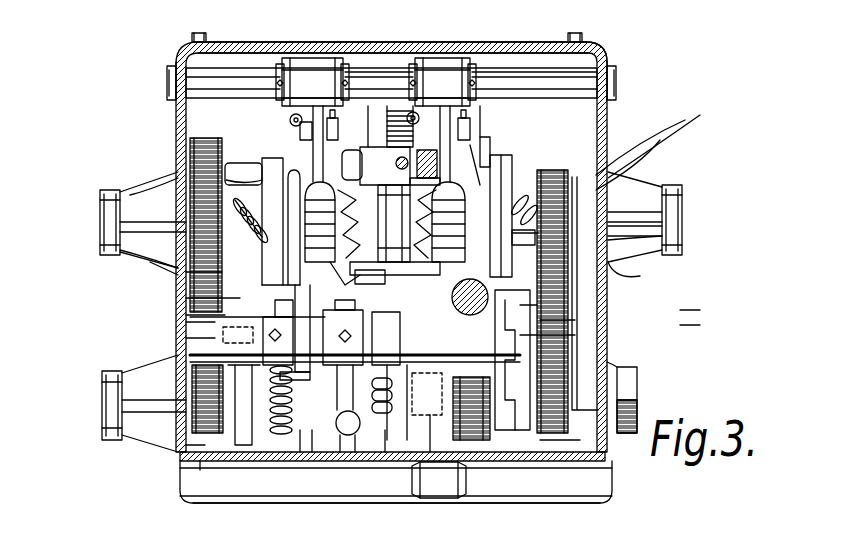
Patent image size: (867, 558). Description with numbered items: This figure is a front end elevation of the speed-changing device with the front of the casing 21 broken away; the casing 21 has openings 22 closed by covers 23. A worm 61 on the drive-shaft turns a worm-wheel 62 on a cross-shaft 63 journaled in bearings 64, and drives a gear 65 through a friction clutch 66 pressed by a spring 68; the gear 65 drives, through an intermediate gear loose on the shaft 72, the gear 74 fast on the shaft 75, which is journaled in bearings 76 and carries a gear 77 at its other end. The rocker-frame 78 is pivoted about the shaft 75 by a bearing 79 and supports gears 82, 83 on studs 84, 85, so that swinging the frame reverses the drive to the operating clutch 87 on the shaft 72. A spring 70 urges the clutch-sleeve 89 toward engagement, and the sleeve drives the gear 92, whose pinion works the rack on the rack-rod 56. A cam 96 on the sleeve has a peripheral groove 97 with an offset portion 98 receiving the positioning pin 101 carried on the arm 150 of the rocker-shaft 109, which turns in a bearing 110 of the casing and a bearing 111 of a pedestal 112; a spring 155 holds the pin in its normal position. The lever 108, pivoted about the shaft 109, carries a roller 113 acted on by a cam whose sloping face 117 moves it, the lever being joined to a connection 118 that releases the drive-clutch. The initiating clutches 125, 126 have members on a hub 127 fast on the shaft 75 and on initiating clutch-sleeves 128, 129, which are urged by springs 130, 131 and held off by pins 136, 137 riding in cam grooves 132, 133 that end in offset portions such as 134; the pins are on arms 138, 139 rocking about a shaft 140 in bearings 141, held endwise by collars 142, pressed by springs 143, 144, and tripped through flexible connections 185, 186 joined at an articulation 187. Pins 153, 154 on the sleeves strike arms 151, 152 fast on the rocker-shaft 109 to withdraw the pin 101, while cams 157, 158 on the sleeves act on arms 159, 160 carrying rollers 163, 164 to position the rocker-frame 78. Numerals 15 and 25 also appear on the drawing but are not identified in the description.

The casing 21 is at (178, 50).
The openings 22 is at (190, 38).
The covers 23 is at (240, 48).
The sloping face 117 is at (580, 38).
The roller 164 is at (600, 55).
The cam 96 is at (190, 500).
The offset portion 98 is at (240, 465).
The gear 92 is at (385, 85).
The connection 185 is at (360, 120).
The connection 186 is at (480, 100).
The shaft 140 is at (167, 88).
The bearings 141 is at (172, 100).
The arm 138 is at (320, 120).
The arm 139 is at (445, 120).
The collars 142 is at (285, 70).
The connection 118 is at (482, 110).
The cam 157 is at (195, 168).
The gear 74 is at (150, 185).
The shaft 75 is at (100, 215).
The offset portion 134 is at (130, 195).
The bearings 76 is at (130, 260).
The peripheral groove 97 is at (180, 275).
The arm 159 is at (190, 275).
The roller 163 is at (190, 298).
The arm 151 is at (180, 315).
The rocker-shaft 109 is at (177, 325).
The bearing 110 is at (180, 338).
The bearings 64 is at (150, 370).
The gear 77 is at (130, 395).
The spring 70 is at (200, 430).
The gear 65 is at (195, 445).
The friction clutch 66 is at (210, 465).
The pin 153 is at (258, 221).
The initiating clutch-sleeve 128 is at (300, 170).
The spring 130 is at (262, 170).
The spring 143 is at (290, 118).
The pin 136 is at (300, 132).
The spring 144 is at (407, 116).
The articulation 187 is at (340, 122).
The rack-rod 56 is at (432, 143).
The arm 160 is at (490, 170).
The pin 137 is at (470, 150).
The initiating clutch-sleeve 129 is at (495, 190).
The spring 131 is at (515, 200).
The hub 127 is at (391, 190).
The cam 132 is at (348, 240).
The initiating clutch 125 is at (365, 275).
The initiating clutch 126 is at (415, 270).
The shaft 25 is at (452, 297).
The lever 108 is at (365, 330).
The bearing 111 is at (410, 320).
The spring 155 is at (268, 415).
The arm 150 is at (300, 455).
The positioning pin 101 is at (330, 440).
The cross-shaft 63 is at (345, 440).
The spring 68 is at (355, 435).
The roller 113 is at (385, 430).
The pedestal 112 is at (430, 420).
The clutch-sleeve 89 is at (450, 500).
The worm-wheel 62 is at (468, 440).
The shaft 72 is at (515, 400).
The operating clutch 87 is at (560, 440).
The pin 154 is at (560, 200).
The cam 158 is at (560, 185).
The line 15 is at (580, 198).
The bearing 79 is at (682, 190).
The rocker-frame 78 is at (660, 235).
The cam 133 is at (620, 275).
The arm 152 is at (577, 300).
The worm 61 is at (520, 305).
The gear 82 is at (700, 310).
The stud 84 is at (700, 325).
The gear 83 is at (560, 380).
The stud 85 is at (620, 410).